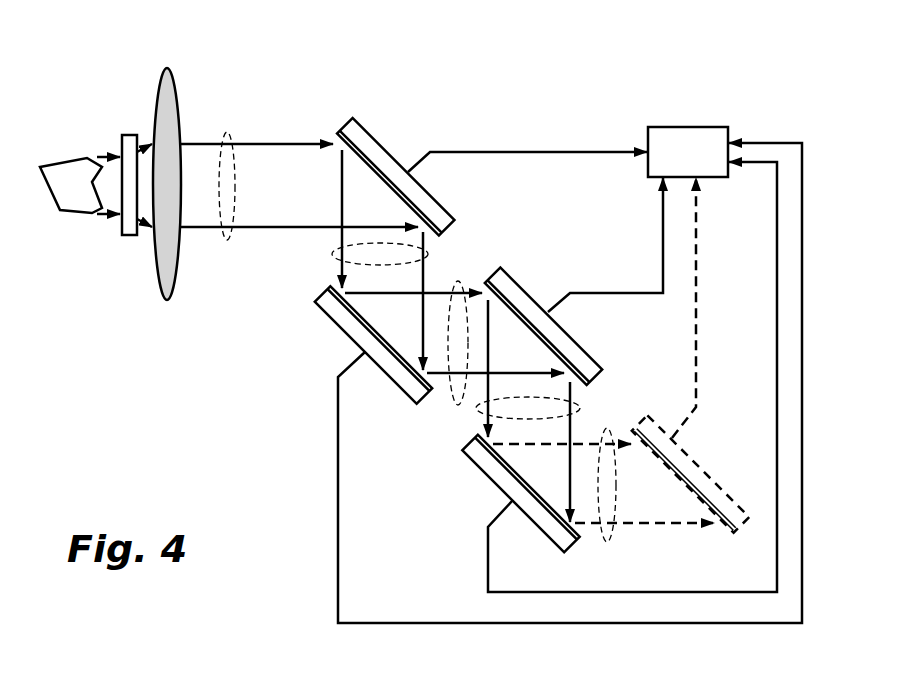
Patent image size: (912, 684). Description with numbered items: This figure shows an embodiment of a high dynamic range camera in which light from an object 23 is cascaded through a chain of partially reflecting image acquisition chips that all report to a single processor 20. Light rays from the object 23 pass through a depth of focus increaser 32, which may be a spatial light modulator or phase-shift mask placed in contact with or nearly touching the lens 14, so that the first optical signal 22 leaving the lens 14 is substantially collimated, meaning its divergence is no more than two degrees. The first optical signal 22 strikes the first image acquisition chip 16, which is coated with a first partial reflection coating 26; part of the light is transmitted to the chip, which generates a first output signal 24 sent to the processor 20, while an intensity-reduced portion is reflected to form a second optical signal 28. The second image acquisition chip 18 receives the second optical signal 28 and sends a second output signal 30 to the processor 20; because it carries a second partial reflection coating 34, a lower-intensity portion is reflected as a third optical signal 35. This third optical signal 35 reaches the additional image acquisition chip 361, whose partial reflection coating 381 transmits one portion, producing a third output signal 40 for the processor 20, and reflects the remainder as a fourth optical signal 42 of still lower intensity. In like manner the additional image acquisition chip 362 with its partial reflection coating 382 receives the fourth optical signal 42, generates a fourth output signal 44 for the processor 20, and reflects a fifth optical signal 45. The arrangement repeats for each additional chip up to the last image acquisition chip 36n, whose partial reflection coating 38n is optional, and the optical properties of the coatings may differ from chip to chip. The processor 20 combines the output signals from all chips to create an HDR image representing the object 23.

The lens 14 is at (166, 70).
The first image acquisition chip 16 is at (382, 143).
The second image acquisition chip 18 is at (333, 323).
The processor 20 is at (678, 127).
The first optical signal 22 is at (227, 245).
The object 23 is at (60, 212).
The first output signal 24 is at (503, 152).
The first partial reflection coating 26 is at (372, 170).
The second optical signal 28 is at (430, 253).
The second output signal 30 is at (338, 462).
The depth of focus increaser 32 is at (128, 135).
The second partial reflection coating 34 is at (400, 324).
The third optical signal 35 is at (457, 400).
The additional image acquisition chip 361 is at (525, 280).
The additional image acquisition chip 362 is at (492, 482).
The last image acquisition chip 36n is at (703, 463).
The partial reflection coating 381 is at (525, 320).
The partial reflection coating 382 is at (560, 497).
The partial reflection coating 38n is at (672, 467).
The third output signal 40 is at (663, 232).
The fourth optical signal 42 is at (578, 408).
The fourth output signal 44 is at (488, 565).
The fifth optical signal 45 is at (608, 542).